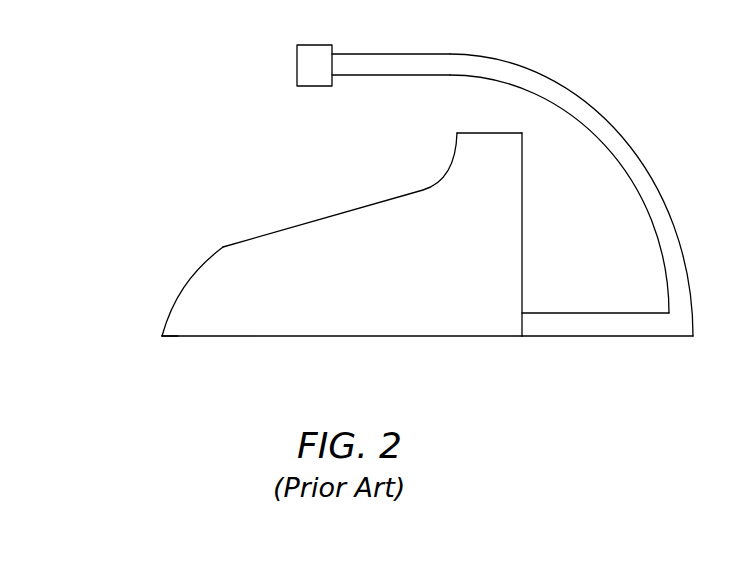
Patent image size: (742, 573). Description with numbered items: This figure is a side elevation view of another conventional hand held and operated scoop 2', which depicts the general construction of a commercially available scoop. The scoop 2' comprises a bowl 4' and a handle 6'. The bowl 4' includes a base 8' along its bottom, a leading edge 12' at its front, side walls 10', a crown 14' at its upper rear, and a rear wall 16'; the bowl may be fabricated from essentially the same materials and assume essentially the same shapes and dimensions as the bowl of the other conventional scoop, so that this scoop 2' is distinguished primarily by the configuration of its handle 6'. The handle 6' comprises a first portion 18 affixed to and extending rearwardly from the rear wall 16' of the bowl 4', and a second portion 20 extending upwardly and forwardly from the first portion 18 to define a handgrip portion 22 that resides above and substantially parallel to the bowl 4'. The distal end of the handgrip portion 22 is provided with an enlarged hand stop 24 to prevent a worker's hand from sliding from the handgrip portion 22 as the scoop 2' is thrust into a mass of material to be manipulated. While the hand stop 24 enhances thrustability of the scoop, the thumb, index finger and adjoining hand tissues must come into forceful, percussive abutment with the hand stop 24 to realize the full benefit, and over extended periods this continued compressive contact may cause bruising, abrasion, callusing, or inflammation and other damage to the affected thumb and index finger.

The scoop 2' is at (347, 249).
The bowl 4' is at (181, 282).
The handle 6' is at (511, 193).
The base 8' is at (342, 359).
The side walls 10' is at (340, 190).
The leading edge 12' is at (136, 364).
The crown 14' is at (496, 119).
The rear wall 16' is at (560, 234).
The first portion 18 is at (603, 323).
The second portion 20 is at (633, 157).
The handgrip portion 22 is at (410, 63).
The hand stop 24 is at (315, 53).